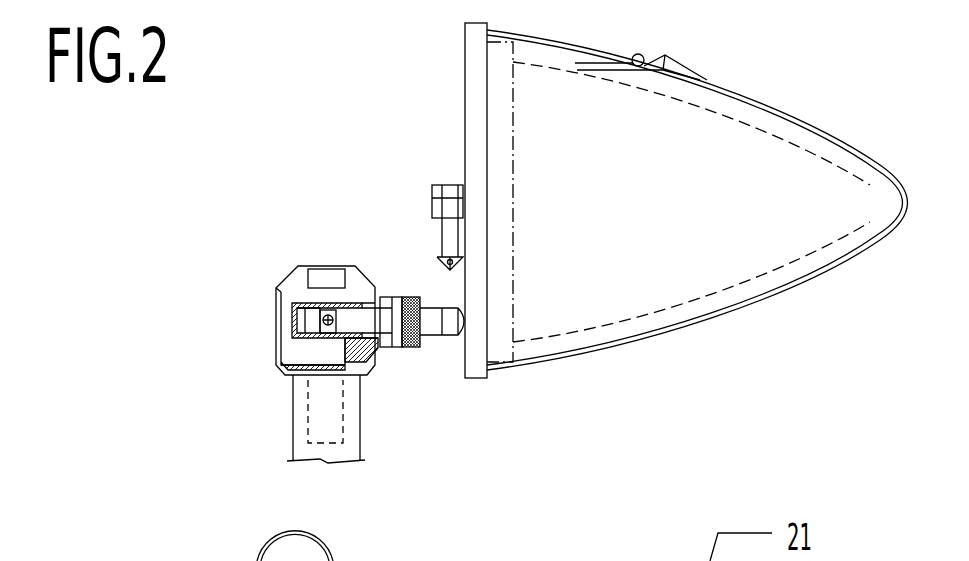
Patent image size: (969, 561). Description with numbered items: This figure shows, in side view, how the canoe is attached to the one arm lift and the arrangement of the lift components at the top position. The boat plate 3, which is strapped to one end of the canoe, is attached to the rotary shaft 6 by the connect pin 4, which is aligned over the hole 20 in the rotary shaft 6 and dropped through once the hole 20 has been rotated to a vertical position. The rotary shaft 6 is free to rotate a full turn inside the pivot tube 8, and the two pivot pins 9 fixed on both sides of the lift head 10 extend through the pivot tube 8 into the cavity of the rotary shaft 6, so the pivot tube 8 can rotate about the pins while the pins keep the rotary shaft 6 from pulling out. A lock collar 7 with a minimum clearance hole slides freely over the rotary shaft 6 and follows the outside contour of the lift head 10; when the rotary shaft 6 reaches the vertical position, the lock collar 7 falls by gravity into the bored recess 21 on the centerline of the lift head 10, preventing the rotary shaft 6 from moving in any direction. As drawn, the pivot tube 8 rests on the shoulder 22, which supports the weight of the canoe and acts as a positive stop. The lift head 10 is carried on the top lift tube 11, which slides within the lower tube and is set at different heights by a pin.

The boat plate 3 is at (465, 75).
The connect pin 4 is at (442, 245).
The rotary shaft 6 is at (412, 350).
The lock collar 7 is at (390, 348).
The pivot tube 8 is at (328, 303).
The pivot pins 9 is at (320, 318).
The lift head 10 is at (275, 330).
The top lift tube 11 is at (293, 420).
The hole 20 is at (455, 340).
The bored recess 21 is at (318, 268).
The shoulder 22 is at (365, 352).